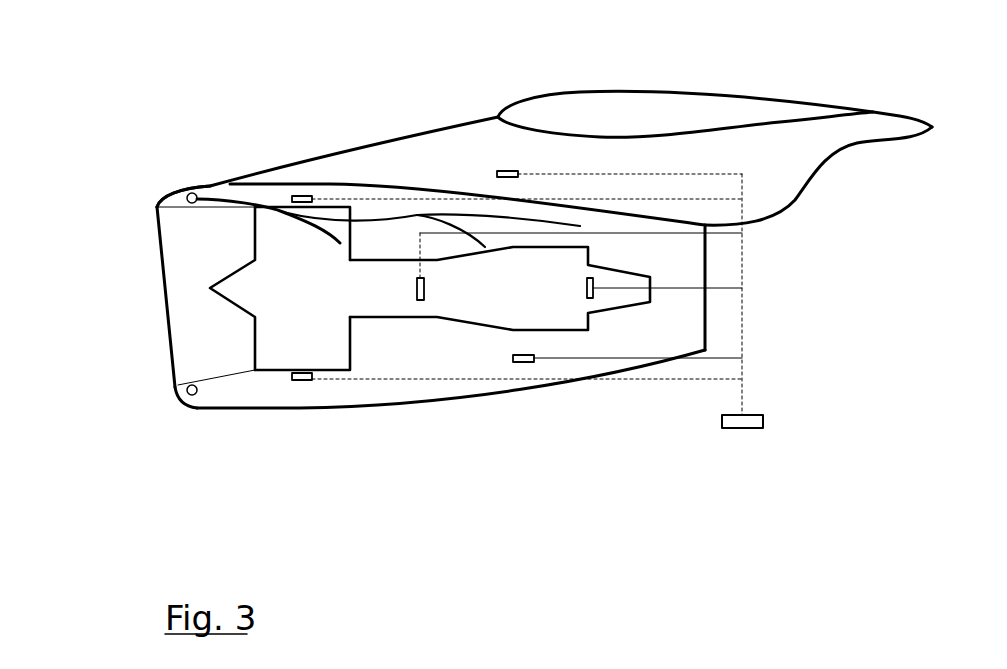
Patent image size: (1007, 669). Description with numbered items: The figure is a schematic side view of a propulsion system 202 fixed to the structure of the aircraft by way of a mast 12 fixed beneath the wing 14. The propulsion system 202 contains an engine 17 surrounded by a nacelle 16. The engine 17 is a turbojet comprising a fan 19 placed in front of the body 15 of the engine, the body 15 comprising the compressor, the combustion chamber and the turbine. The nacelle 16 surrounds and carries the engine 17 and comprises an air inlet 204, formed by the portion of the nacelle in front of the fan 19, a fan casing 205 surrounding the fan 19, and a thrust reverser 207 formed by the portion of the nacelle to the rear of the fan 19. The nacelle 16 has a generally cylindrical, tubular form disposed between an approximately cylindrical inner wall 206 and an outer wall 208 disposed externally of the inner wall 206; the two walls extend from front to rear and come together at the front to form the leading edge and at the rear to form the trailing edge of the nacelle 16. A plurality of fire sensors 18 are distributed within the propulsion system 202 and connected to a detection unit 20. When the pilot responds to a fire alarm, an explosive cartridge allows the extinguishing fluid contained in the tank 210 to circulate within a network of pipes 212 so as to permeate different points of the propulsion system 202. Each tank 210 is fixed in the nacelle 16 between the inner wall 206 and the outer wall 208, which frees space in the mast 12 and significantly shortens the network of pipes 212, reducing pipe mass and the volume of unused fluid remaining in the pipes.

The mast 12 is at (440, 145).
The wing 14 is at (625, 105).
The body of the engine 15 is at (532, 300).
The nacelle 16 is at (400, 393).
The engine 17 is at (258, 322).
The fire sensors 18 is at (290, 198).
The fan 19 is at (278, 345).
The detection unit 20 is at (735, 428).
The propulsion system 202 is at (433, 505).
The air inlet 204 is at (182, 338).
The fan casing 205 is at (318, 373).
The inner wall 206 is at (227, 205).
The thrust reverser 207 is at (460, 388).
The outer wall 208 is at (210, 187).
The tank 210 is at (203, 407).
The network of pipes 212 is at (163, 210).